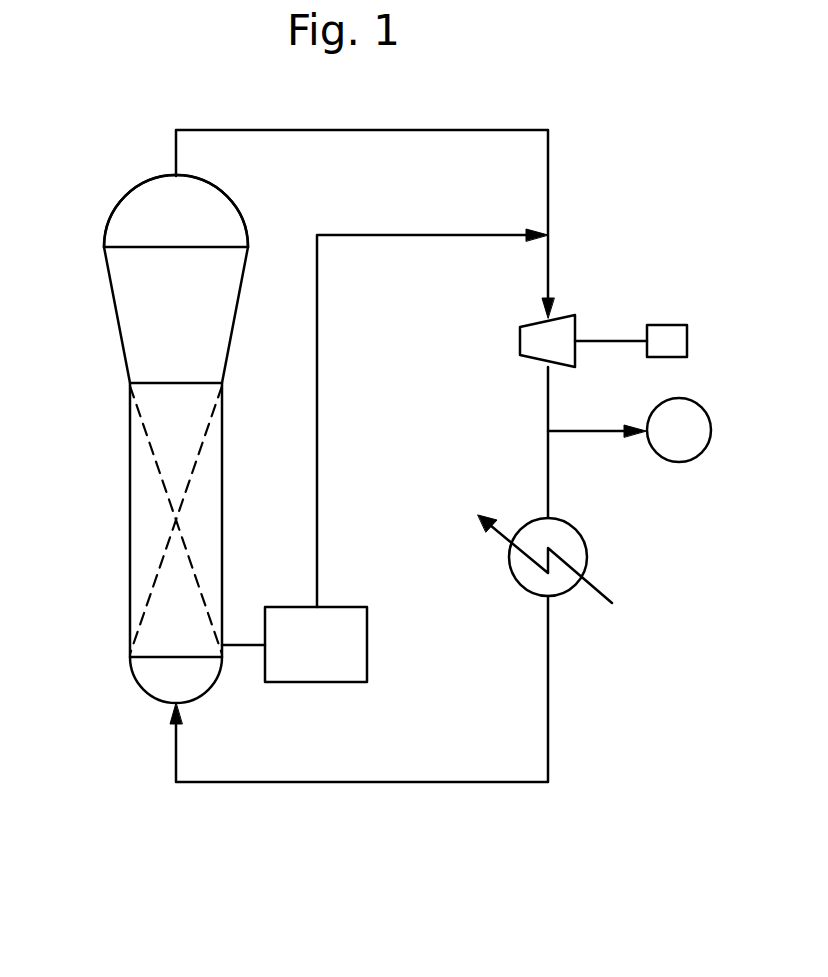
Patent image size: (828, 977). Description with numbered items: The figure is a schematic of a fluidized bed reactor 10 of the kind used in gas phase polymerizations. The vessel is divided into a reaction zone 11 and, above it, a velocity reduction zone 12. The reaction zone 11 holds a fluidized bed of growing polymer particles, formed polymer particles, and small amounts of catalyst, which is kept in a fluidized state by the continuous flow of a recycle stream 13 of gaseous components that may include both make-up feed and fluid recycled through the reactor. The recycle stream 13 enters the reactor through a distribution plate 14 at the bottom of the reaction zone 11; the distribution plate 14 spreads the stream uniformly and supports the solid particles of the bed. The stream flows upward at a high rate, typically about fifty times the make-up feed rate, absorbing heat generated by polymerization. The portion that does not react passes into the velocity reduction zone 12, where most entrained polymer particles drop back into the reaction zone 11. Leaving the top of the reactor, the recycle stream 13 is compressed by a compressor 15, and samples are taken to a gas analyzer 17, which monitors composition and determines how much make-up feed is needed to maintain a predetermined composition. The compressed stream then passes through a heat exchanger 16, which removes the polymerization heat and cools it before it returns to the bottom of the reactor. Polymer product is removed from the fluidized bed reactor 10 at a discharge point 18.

The fluidized bed reactor 10 is at (129, 437).
The reaction zone 11 is at (195, 440).
The velocity reduction zone 12 is at (195, 225).
The recycle stream 13 is at (458, 128).
The distribution plate 14 is at (129, 659).
The compressor 15 is at (567, 313).
The heat exchanger 16 is at (588, 543).
The gas analyzer 17 is at (700, 447).
The discharge point 18 is at (338, 663).